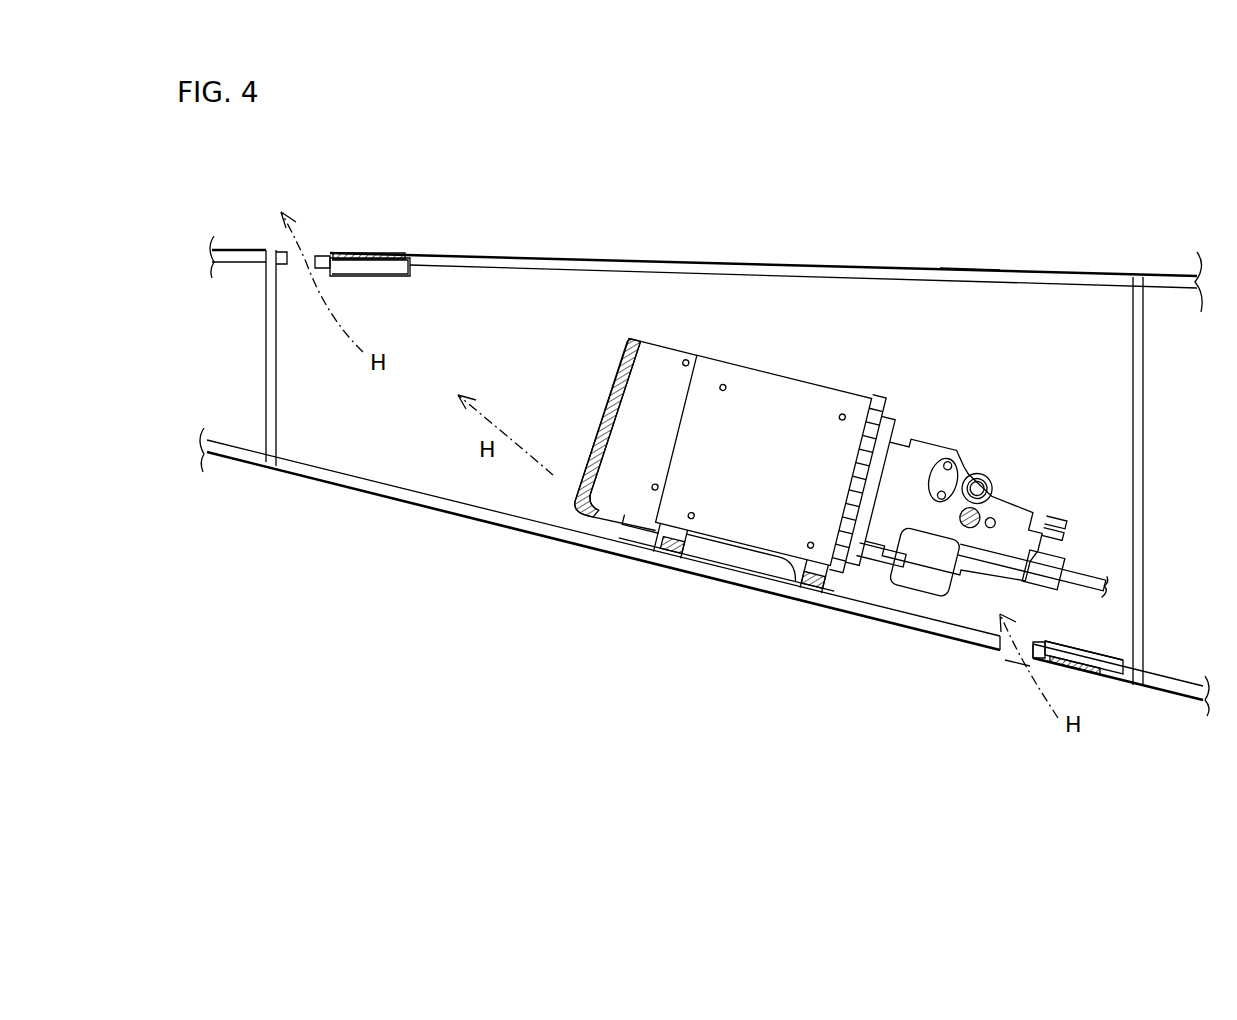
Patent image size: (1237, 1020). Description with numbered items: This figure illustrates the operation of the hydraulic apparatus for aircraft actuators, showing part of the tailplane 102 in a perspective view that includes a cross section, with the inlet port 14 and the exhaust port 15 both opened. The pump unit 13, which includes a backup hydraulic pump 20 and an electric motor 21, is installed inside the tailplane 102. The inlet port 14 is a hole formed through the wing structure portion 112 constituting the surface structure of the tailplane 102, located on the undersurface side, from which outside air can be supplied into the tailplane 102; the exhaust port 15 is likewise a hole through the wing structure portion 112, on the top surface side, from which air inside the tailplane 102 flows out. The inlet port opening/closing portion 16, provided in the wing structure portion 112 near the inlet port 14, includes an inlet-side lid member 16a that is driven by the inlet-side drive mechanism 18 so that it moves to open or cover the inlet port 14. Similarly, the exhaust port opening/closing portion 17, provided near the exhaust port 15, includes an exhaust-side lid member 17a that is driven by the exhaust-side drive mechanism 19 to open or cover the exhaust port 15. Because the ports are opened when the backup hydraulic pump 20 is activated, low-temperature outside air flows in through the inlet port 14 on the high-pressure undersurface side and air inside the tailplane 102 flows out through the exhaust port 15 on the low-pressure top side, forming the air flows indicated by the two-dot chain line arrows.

The tailplane 102 is at (1018, 258).
The wing structure portion 112 is at (942, 268).
The pump unit 13 is at (1000, 428).
The inlet port 14 is at (1010, 657).
The exhaust port 15 is at (292, 268).
The inlet port opening/closing portion 16 is at (1040, 640).
The inlet-side lid member 16a is at (1055, 639).
The exhaust port opening/closing portion 17 is at (318, 269).
The exhaust-side lid member 17a is at (318, 258).
The inlet-side drive mechanism 18 is at (1101, 668).
The exhaust-side drive mechanism 19 is at (385, 262).
The backup hydraulic pump 20 is at (937, 525).
The electric motor 21 is at (805, 380).